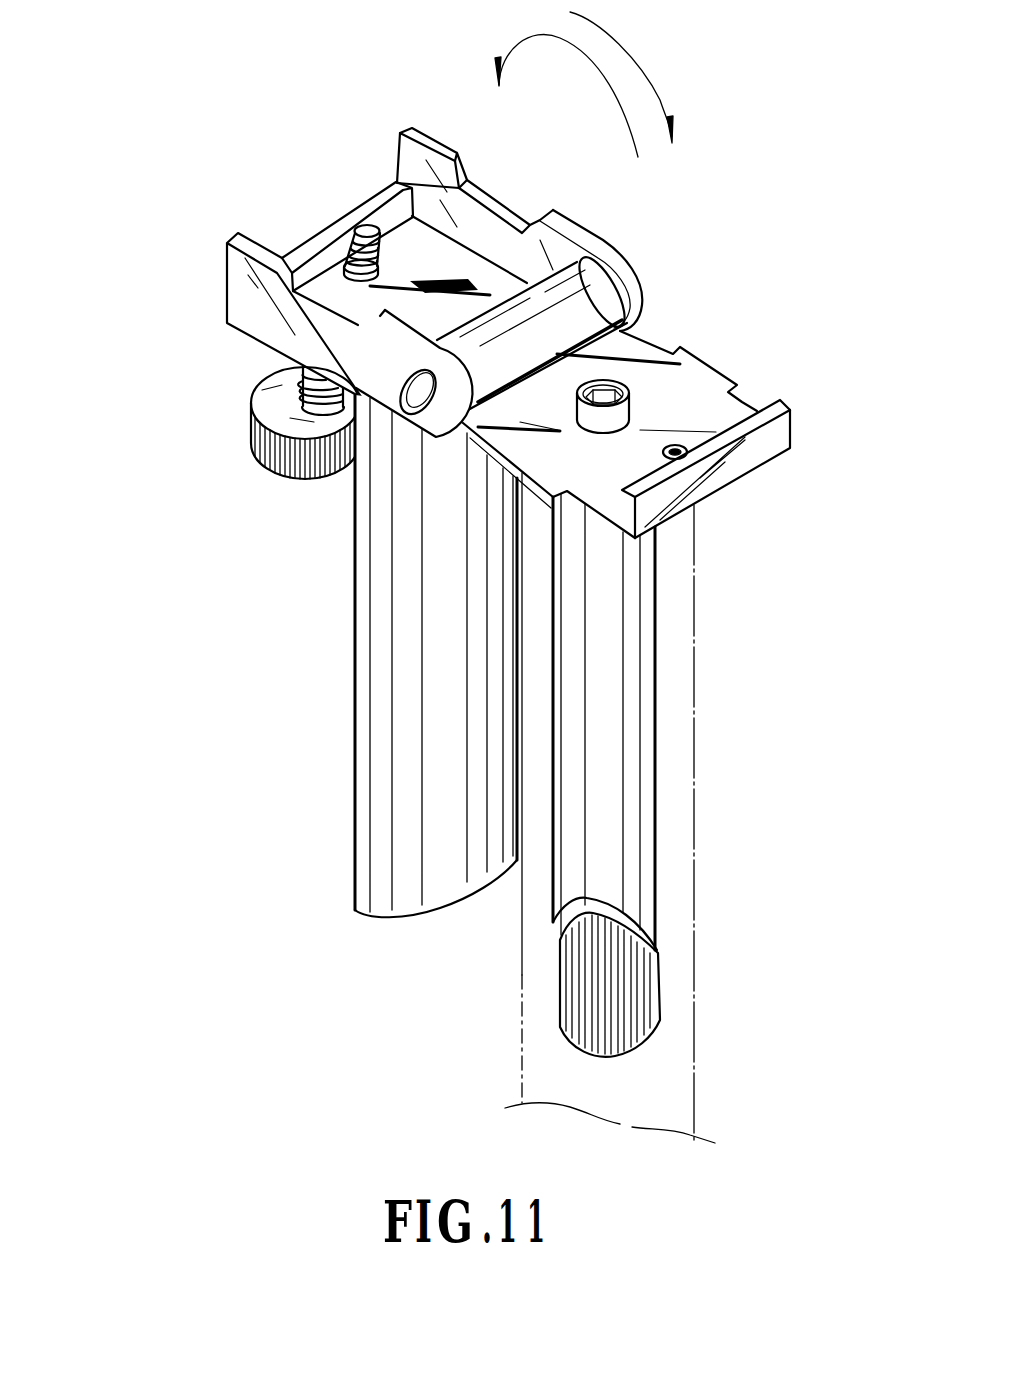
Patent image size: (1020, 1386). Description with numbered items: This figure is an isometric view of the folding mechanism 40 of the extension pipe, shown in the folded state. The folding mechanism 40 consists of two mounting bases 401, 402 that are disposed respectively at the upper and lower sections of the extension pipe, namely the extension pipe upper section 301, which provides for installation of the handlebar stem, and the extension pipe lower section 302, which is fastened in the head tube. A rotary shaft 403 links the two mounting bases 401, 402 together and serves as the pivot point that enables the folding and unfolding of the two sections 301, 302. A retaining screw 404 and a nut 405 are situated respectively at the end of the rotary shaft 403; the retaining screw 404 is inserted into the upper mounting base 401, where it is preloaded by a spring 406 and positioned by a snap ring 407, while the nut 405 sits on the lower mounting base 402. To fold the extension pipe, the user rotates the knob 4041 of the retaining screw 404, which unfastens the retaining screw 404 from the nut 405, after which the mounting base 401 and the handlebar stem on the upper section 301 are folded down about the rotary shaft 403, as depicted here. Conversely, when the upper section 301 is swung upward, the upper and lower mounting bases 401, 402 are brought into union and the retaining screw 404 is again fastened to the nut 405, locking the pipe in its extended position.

The folding mechanism 40 is at (660, 220).
The mounting base 401 is at (226, 270).
The mounting base 402 is at (655, 384).
The rotary shaft 403 is at (420, 400).
The retaining screw 404 is at (363, 230).
The nut 405 is at (678, 448).
The spring 406 is at (338, 376).
The snap ring 407 is at (338, 262).
The knob 4041 is at (252, 426).
The extension pipe upper section 301 is at (373, 712).
The extension pipe lower section 302 is at (637, 665).